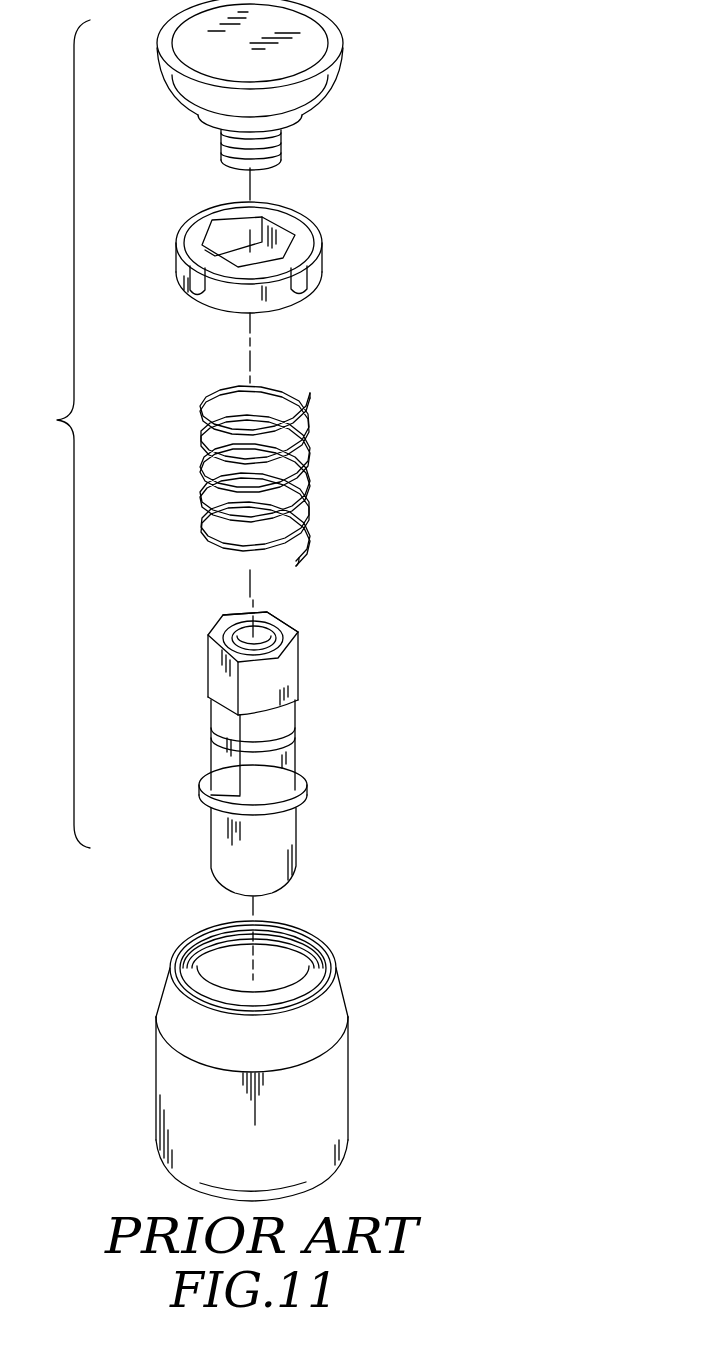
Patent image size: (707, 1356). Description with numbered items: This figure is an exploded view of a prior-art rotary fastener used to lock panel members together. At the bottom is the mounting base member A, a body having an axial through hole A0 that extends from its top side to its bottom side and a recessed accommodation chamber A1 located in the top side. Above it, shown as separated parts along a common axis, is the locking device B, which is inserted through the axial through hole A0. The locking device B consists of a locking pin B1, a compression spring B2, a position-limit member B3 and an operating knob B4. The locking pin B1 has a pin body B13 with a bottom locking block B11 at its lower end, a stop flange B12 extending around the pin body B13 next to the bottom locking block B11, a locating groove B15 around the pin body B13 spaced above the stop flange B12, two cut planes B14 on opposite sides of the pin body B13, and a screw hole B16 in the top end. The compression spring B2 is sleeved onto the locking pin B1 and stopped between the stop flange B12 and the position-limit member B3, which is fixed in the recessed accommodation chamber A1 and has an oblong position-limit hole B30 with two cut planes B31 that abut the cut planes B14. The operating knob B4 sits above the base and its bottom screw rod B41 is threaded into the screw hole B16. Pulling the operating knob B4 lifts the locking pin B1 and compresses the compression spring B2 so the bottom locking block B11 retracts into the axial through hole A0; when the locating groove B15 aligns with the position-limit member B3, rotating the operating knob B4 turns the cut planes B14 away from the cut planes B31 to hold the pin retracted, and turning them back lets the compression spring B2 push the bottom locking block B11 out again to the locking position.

The locking device B is at (63, 434).
The operating knob B4 is at (335, 46).
The bottom screw rod B41 is at (224, 147).
The position-limit member B3 is at (255, 251).
The oblong position-limit hole B30 is at (236, 245).
The cut planes of position-limit member B31 is at (281, 238).
The compression spring B2 is at (306, 462).
The locking pin B1 is at (256, 746).
The cut planes of locking pin B14 is at (283, 620).
The pin body B13 is at (286, 674).
The screw hole B16 is at (240, 638).
The locating groove B15 is at (218, 718).
The stop flange B12 is at (296, 793).
The bottom locking block B11 is at (220, 836).
The mounting base member A is at (256, 1061).
The axial through hole A0 is at (278, 977).
The recessed accommodation chamber A1 is at (205, 968).